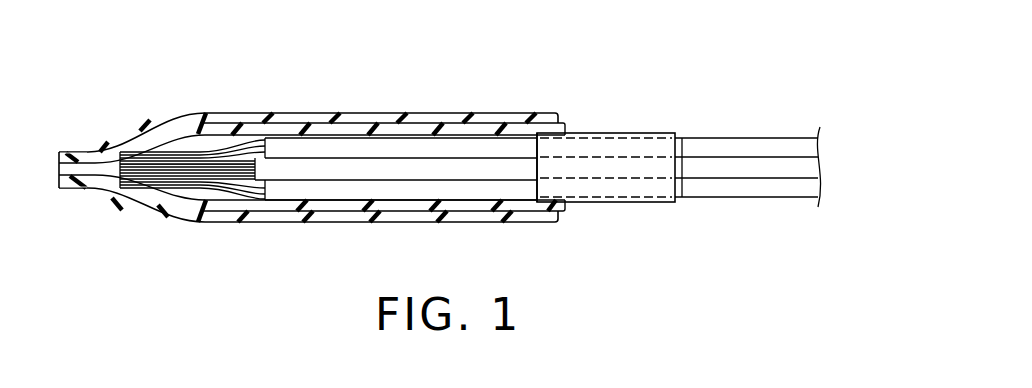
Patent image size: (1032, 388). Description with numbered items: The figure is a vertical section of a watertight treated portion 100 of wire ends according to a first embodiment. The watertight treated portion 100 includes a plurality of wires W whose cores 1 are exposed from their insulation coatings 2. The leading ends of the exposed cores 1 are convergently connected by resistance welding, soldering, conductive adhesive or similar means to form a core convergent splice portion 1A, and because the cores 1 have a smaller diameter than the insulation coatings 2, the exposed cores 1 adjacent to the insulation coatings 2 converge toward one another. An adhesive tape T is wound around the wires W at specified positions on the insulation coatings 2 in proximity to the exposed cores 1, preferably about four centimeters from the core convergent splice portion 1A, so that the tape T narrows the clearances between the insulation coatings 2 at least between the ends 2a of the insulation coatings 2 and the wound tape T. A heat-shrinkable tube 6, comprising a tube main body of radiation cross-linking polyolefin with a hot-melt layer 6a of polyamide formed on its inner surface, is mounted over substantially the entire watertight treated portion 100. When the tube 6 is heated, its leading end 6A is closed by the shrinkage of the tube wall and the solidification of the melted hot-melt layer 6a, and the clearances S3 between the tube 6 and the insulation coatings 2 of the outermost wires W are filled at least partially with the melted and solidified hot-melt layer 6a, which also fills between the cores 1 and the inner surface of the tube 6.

The watertight treated portion of wire ends 100 is at (492, 71).
The heat-shrinkable tube 6 is at (413, 117).
The hot-melt layer 6a is at (345, 133).
The leading end of the tube 6A is at (82, 150).
The cores 1 is at (235, 140).
The core convergent splice portion 1A is at (150, 170).
The insulation coatings 2 is at (723, 145).
The ends of the insulation coatings 2a is at (275, 170).
The wires W is at (445, 170).
The adhesive tape T is at (623, 145).
The clearances between the tube and the insulation coatings S3 is at (505, 125).